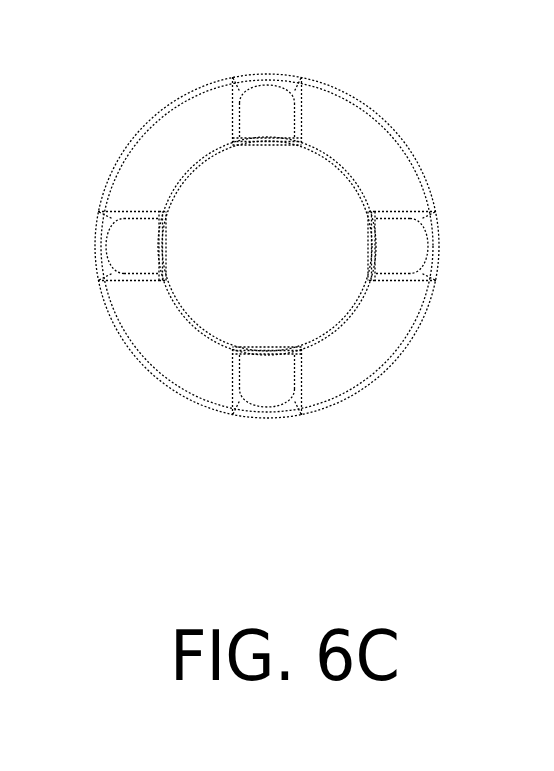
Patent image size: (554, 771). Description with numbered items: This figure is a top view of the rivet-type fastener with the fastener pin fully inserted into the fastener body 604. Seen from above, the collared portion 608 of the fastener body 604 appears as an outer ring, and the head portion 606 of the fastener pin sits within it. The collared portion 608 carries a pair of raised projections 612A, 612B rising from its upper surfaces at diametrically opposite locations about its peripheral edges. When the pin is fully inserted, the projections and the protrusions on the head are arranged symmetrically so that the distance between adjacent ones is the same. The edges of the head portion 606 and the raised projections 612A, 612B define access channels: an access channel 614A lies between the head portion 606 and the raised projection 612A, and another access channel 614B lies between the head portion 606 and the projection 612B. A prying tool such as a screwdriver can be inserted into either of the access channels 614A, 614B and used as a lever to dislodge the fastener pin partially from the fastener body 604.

The fastener body 604 is at (8, 109).
The head portion 606 is at (279, 169).
The collared portion 608 is at (308, 78).
The raised projection 612A is at (139, 261).
The raised projection 612B is at (405, 233).
The access channel 614A is at (168, 235).
The access channel 614B is at (366, 235).